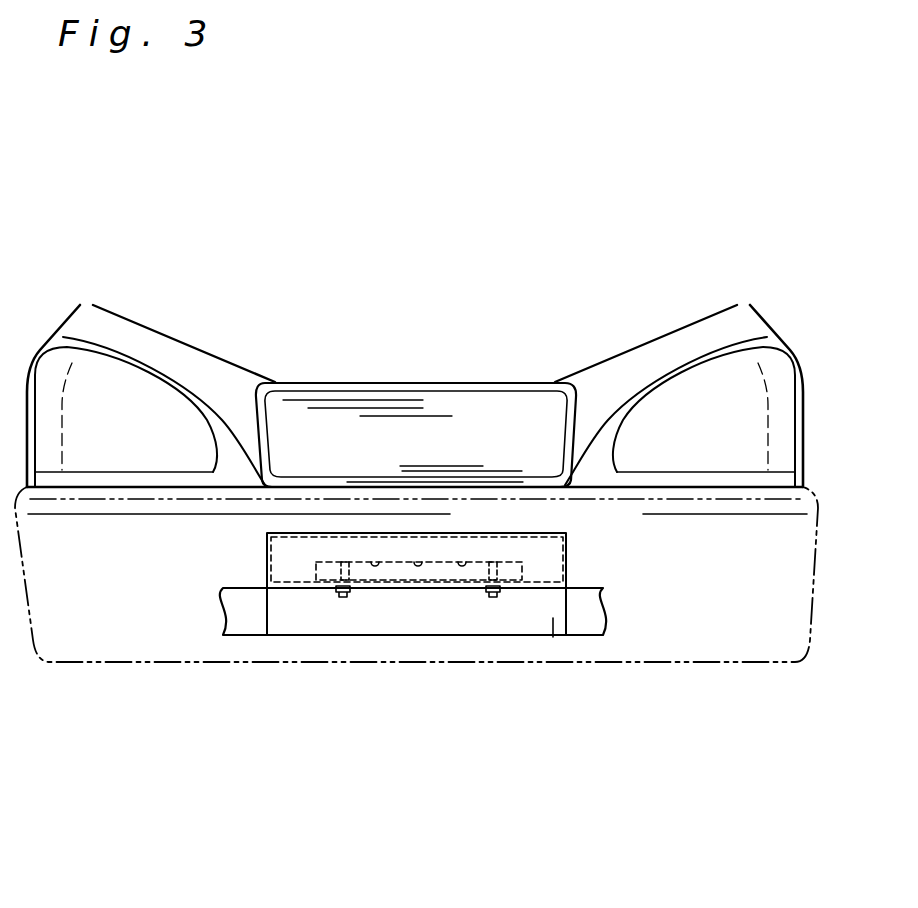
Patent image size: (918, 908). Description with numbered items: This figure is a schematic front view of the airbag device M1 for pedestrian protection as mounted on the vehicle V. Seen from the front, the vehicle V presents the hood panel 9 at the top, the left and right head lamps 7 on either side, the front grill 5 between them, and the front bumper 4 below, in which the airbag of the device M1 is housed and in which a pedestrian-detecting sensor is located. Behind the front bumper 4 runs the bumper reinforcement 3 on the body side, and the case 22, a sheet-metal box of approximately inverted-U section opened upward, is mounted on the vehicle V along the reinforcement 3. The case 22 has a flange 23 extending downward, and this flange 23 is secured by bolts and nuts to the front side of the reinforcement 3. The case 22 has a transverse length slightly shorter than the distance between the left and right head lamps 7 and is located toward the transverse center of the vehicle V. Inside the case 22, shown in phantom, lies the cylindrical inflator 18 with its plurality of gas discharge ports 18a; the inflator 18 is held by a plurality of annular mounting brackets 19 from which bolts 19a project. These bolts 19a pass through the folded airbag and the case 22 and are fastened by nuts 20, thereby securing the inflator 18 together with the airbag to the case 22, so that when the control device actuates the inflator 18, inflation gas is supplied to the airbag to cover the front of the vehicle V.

The vehicle V is at (43, 282).
The bumper reinforcement 3 is at (243, 622).
The front bumper 4 is at (72, 627).
The front grill 5 is at (498, 402).
The head lamps 7 is at (120, 383).
The hood panel 9 is at (412, 322).
The inflator 18 is at (517, 580).
The gas discharge ports 18a is at (375, 560).
The annular mounting brackets 19 is at (345, 560).
The bolts 19a is at (347, 582).
The nut 20 is at (343, 597).
The case 22 is at (282, 558).
The flange 23 is at (553, 620).
The airbag device M1 is at (610, 578).